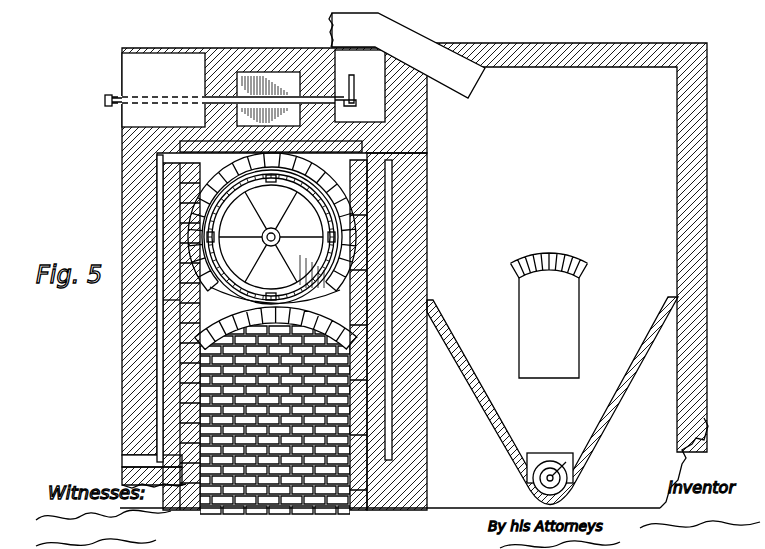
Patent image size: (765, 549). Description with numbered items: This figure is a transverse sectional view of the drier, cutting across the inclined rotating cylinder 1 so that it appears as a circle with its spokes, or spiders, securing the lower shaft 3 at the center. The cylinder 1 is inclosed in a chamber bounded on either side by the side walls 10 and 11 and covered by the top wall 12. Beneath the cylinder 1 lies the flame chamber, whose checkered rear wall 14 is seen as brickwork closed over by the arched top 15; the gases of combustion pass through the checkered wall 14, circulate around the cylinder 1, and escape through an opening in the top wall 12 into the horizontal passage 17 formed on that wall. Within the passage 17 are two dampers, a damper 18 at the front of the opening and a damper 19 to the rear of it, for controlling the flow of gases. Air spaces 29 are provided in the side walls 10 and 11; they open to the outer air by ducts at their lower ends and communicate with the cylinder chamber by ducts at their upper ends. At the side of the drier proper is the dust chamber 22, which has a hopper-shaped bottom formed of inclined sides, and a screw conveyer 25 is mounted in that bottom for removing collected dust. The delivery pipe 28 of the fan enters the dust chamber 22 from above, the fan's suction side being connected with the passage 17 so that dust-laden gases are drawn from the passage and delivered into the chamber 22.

The cylinder 1 is at (210, 292).
The lower shaft 3 is at (280, 242).
The side wall 10 is at (158, 348).
The side wall 11 is at (412, 245).
The top wall 12 is at (172, 127).
The rear wall 14 is at (275, 492).
The arched top 15 is at (182, 378).
The horizontal passage 17 is at (250, 78).
The damper 18 is at (270, 100).
The damper 19 is at (108, 104).
The dust chamber 22 is at (549, 260).
The screw conveyer 25 is at (553, 462).
The delivery pipe 28 is at (428, 48).
The air spaces 29 is at (162, 230).